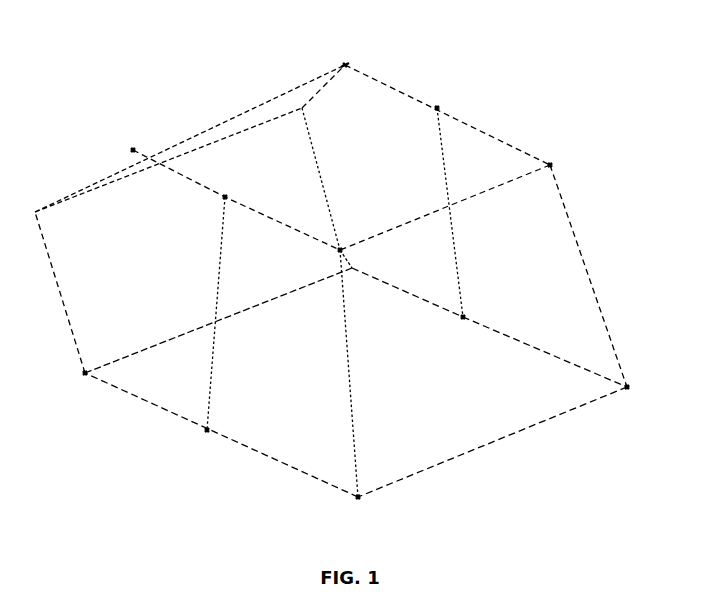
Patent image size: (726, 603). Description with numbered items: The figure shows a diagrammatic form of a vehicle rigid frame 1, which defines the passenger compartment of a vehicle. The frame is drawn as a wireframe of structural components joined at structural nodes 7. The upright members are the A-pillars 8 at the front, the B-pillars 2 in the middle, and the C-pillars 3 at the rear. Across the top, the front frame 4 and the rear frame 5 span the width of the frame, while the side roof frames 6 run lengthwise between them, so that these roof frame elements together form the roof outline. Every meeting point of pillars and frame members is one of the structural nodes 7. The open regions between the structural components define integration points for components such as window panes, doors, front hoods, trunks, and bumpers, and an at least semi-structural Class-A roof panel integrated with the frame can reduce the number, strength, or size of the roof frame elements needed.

The vehicle rigid frame 1 is at (240, 36).
The B-pillars 2 is at (440, 143).
The C-pillars 3 is at (578, 240).
The front frame 4 is at (203, 122).
The rear frame 5 is at (523, 174).
The side roof frames 6 is at (199, 181).
The structural nodes 7 is at (346, 64).
The A-pillars 8 is at (90, 184).